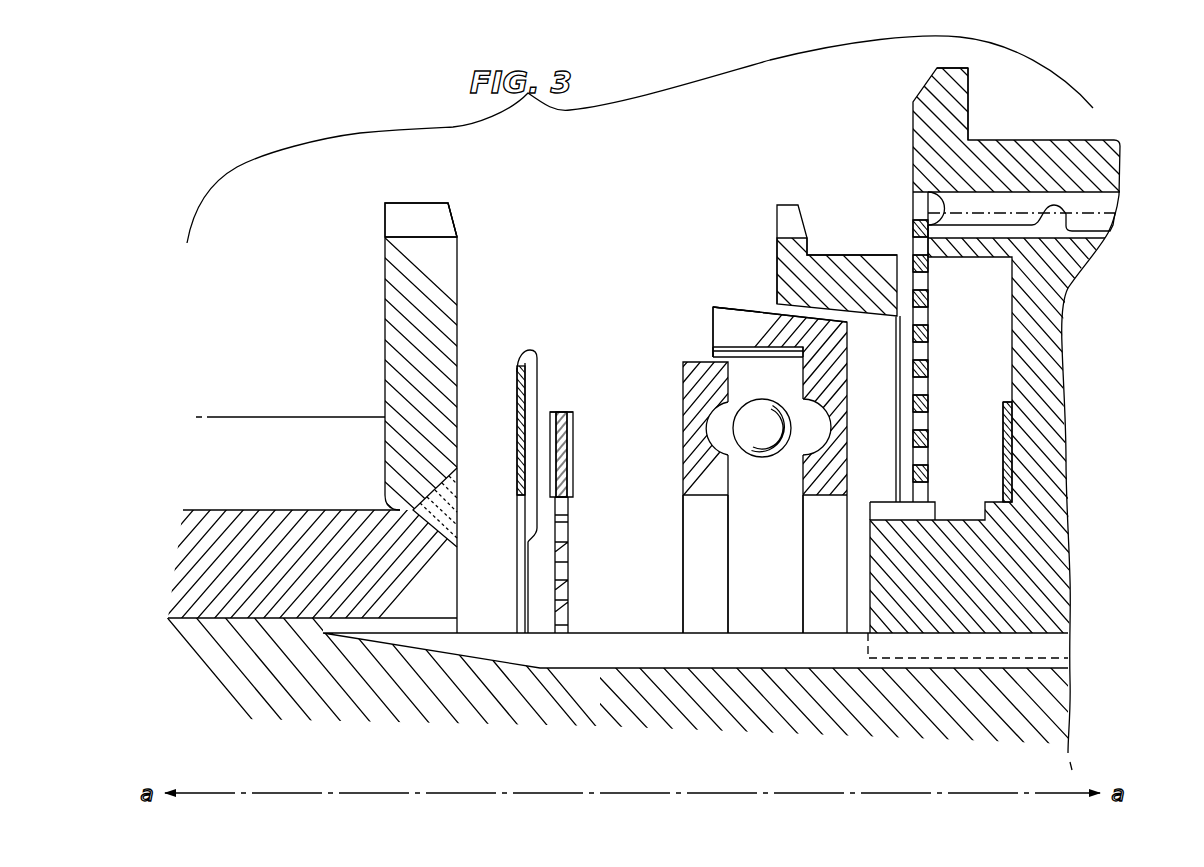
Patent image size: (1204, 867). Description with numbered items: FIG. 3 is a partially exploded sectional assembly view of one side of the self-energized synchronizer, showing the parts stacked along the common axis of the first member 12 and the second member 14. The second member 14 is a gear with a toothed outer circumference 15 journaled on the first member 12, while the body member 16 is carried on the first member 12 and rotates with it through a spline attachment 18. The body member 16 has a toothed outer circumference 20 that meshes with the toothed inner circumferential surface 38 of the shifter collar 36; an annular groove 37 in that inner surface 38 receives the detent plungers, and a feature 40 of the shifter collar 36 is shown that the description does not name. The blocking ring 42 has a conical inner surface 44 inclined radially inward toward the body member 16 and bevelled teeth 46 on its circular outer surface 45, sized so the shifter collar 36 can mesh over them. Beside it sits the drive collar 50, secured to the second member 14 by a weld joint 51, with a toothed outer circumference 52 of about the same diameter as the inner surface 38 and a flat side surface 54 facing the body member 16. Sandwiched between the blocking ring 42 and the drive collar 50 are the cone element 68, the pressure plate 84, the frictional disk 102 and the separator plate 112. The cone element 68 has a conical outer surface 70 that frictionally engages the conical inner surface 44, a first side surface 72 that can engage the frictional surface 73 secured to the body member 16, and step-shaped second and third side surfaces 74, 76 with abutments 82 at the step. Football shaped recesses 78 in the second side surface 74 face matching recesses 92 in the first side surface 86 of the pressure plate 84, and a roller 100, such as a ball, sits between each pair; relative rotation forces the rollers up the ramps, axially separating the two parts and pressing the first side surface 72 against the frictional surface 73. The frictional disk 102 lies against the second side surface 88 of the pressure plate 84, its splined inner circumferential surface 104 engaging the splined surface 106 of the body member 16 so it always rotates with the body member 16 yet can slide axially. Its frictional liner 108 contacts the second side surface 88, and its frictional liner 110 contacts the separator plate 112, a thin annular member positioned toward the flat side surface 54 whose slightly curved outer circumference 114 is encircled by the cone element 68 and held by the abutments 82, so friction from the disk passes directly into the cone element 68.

The first member 12 is at (772, 707).
The second member 14 is at (272, 583).
The toothed outer circumference 15 is at (250, 415).
The body member 16 is at (960, 573).
The spline attachment 18 is at (980, 650).
The toothed outer circumference 20 is at (1095, 204).
The shifter collar 36 is at (910, 122).
The annular groove 37 is at (1097, 228).
The toothed inner circumferential surface 38 is at (928, 192).
The cover shoulder 40 is at (968, 68).
The blocking ring 42 is at (770, 246).
The conical inner surface 44 is at (839, 313).
The circular outer surface 45 is at (822, 253).
The bevelled teeth 46 is at (786, 208).
The drive collar 50 is at (383, 268).
The weld joint 51 is at (430, 518).
The toothed outer circumference 52 is at (437, 203).
The flat side surface 54 is at (460, 237).
The cone element 68 is at (710, 311).
The conical outer surface 70 is at (738, 307).
The first side surface 72 is at (848, 441).
The frictional surface 73 is at (1004, 406).
The second side surface 74 is at (803, 488).
The third side surface 76 is at (711, 328).
The football shaped recesses 78 is at (812, 417).
The abutments 82 is at (782, 348).
The pressure plate 84 is at (682, 361).
The first side surface 86 is at (729, 487).
The second side surface 88 is at (683, 482).
The football shaped recesses 92 is at (713, 432).
The roller 100 is at (776, 459).
The frictional disk 102 is at (571, 501).
The splined inner circumferential surface 104 is at (568, 551).
The splined surface 106 is at (945, 512).
The frictional liner 108 is at (574, 425).
The frictional liner 110 is at (551, 418).
The separator plate 112 is at (515, 453).
The curved outer circumference 114 is at (537, 354).